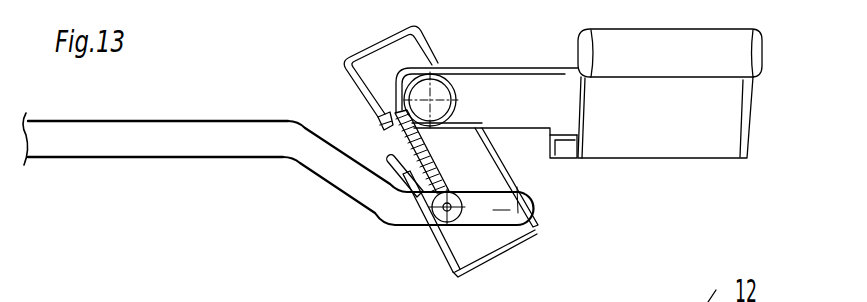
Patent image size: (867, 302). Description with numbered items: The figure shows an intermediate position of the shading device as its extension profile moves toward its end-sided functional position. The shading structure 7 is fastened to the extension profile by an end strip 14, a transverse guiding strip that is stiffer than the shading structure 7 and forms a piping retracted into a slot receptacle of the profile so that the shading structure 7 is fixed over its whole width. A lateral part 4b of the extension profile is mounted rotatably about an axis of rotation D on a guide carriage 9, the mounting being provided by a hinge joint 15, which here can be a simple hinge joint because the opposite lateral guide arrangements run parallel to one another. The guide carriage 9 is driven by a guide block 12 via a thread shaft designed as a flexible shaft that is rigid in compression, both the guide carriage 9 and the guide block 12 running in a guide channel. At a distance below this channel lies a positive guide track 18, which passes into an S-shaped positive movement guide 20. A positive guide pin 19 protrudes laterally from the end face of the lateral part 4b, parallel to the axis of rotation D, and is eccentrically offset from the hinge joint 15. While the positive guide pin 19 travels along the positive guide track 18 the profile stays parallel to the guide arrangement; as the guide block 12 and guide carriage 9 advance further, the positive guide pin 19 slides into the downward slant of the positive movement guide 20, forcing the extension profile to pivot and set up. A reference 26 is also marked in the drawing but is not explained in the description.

The positive guide track 18 is at (92, 143).
The positive movement guide 20 is at (355, 183).
The positive guide pin 19 is at (427, 227).
The end strip 14 is at (425, 157).
The shading structure 7 is at (412, 152).
The lateral part 4b is at (437, 50).
The axis of rotation D is at (460, 90).
The guide carriage 9 is at (640, 140).
The guide block 12 is at (658, 38).
The hinge joint 15 is at (319, 8).
The element 26 is at (458, 0).